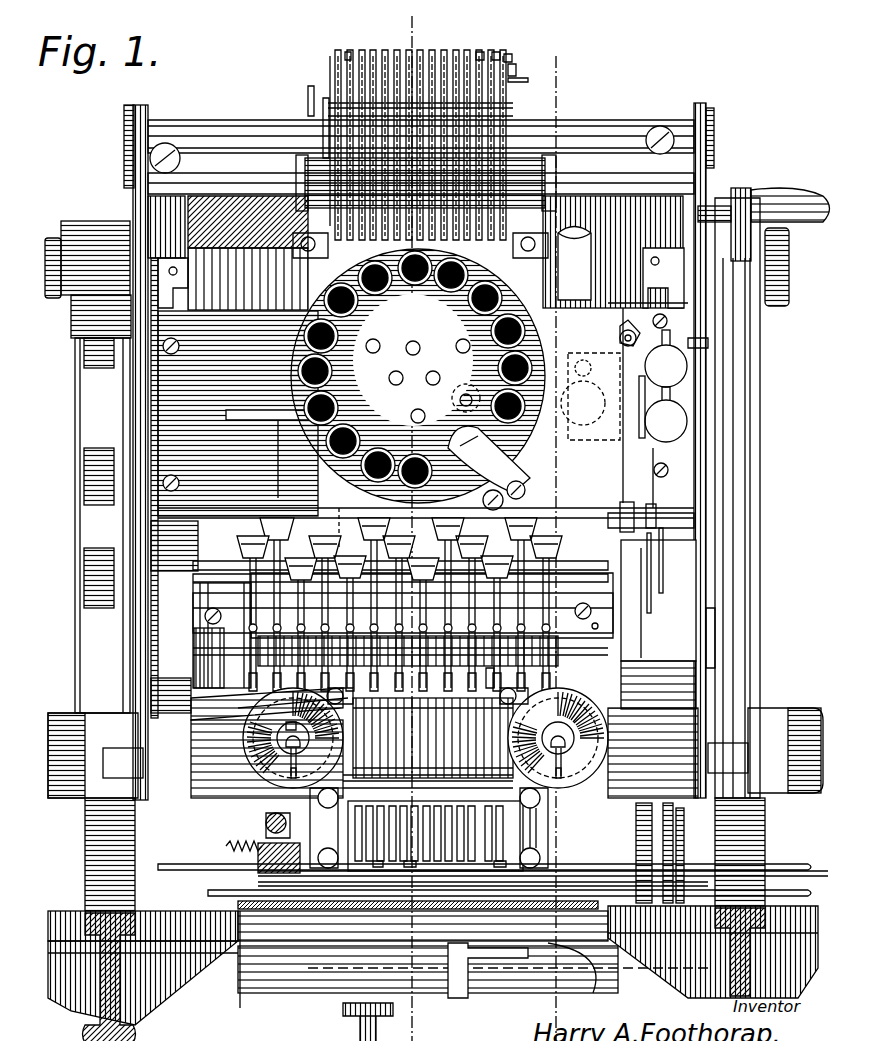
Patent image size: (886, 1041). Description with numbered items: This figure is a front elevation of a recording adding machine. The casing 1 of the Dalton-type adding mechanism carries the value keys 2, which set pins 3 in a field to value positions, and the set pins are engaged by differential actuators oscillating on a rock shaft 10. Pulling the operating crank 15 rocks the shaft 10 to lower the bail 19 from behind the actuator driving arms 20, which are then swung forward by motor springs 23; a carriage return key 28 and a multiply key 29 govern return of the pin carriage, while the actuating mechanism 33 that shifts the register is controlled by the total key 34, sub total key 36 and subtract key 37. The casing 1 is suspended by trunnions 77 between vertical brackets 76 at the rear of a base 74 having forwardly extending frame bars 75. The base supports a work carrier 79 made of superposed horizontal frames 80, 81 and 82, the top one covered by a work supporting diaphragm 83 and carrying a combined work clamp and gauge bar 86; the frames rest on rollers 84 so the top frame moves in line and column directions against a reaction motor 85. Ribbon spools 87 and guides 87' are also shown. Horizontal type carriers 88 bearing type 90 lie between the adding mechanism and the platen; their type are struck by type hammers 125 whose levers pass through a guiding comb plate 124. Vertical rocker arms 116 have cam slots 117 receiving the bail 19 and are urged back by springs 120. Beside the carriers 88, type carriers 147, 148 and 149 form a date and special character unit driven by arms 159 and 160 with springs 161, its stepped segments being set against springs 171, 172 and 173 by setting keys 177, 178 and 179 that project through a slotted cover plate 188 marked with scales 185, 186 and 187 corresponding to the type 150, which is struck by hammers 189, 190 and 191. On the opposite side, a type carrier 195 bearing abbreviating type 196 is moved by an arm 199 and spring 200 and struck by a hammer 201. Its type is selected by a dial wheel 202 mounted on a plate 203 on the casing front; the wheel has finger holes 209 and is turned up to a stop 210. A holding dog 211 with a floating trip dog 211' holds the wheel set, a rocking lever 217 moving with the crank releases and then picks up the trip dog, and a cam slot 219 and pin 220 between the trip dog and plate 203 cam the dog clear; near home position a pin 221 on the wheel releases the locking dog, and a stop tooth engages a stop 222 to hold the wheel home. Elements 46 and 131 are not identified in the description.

The casing 1 is at (82, 405).
The value keys 2 is at (394, 1029).
The set pins 3 is at (556, 1034).
The rock shaft 10 is at (185, 128).
The operating crank 15 is at (772, 190).
The actuator releasing and returning bail 19 is at (318, 100).
The actuator driving arms 20 is at (392, 48).
The motor springs 23 is at (482, 48).
The carriage return key 28 is at (250, 410).
The multiply key 29 is at (242, 606).
The actuating mechanism 33 is at (268, 508).
The total key 34 is at (670, 360).
The sub total key 36 is at (677, 413).
The subtract key 37 is at (560, 600).
The type bar 46 is at (340, 45).
The base 74 is at (60, 1002).
The frame bars 75 is at (127, 1030).
The vertical brackets 76 is at (74, 840).
The trunnions 77 is at (44, 232).
The work carrier 79 is at (770, 858).
The horizontal frame 80 is at (576, 925).
The horizontal frame 81 is at (770, 880).
The horizontal frame 82 is at (592, 873).
The work supporting diaphragm 83 is at (556, 868).
The rollers 84 is at (326, 936).
The reaction motor 85 is at (240, 942).
The combined work clamp and gauge bar 86 is at (252, 862).
The ribbon spools 87 is at (470, 743).
The ribbon guides 87' is at (429, 772).
The type carriers 88 is at (258, 824).
The type 90 is at (402, 860).
The rocker arms 116 is at (302, 252).
The cam slots 117 is at (292, 206).
The springs 120 is at (504, 60).
The guiding comb plate 124 is at (342, 680).
The type hammers 125 is at (322, 693).
The spring 131 is at (440, 895).
The type carrier 147 is at (528, 830).
The type carrier 148 is at (520, 814).
The type carrier 149 is at (446, 840).
The type 150 is at (492, 856).
The arm 159 is at (500, 50).
The arm 160 is at (488, 46).
The springs 161 is at (520, 72).
The spring 171 is at (660, 820).
The spring 172 is at (664, 848).
The spring 173 is at (630, 830).
The setting key 177 is at (686, 510).
The setting key 178 is at (642, 496).
The setting key 179 is at (614, 496).
The scale 185 is at (682, 556).
The scale 186 is at (682, 528).
The scale 187 is at (638, 625).
The slotted cover plate 188 is at (702, 630).
The hammer 189 is at (540, 690).
The hammer 190 is at (548, 716).
The hammer 191 is at (490, 649).
The type carrier 195 is at (292, 845).
The abbreviating type 196 is at (372, 856).
The arm 199 is at (300, 84).
The spring 200 is at (330, 52).
The hammer 201 is at (292, 714).
The dial wheel 202 is at (460, 384).
The plate 203 is at (147, 460).
The finger holes 209 is at (614, 333).
The stop 210 is at (455, 400).
The holding dog 211 is at (590, 396).
The trip dog 211' is at (743, 344).
The rocking lever 217 is at (640, 396).
The cam slot 219 is at (625, 316).
The pin 220 is at (658, 342).
The pin 221 is at (468, 428).
The stop 222 is at (532, 470).